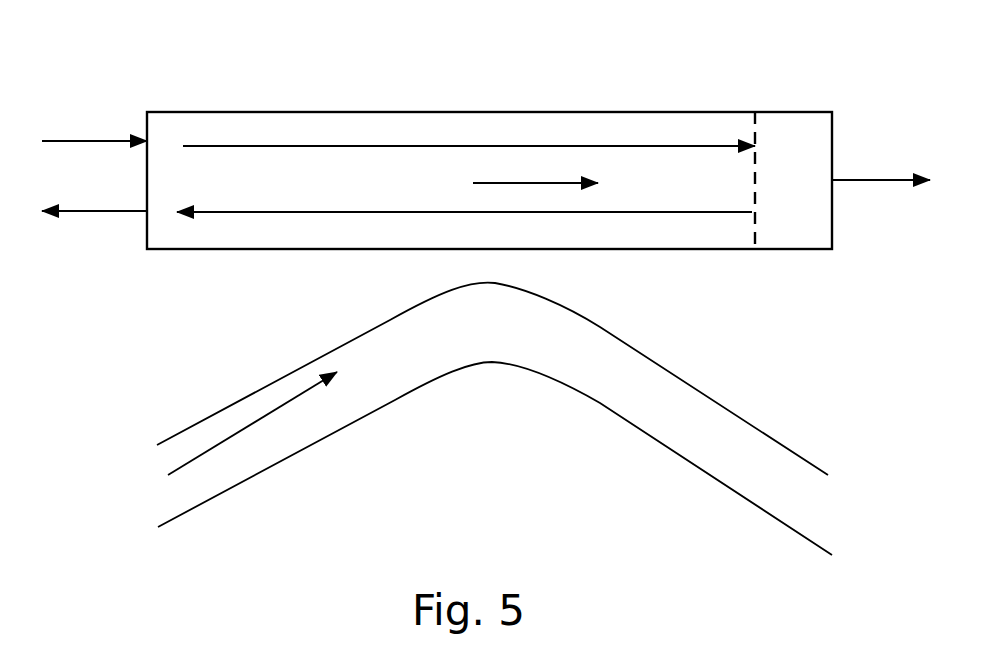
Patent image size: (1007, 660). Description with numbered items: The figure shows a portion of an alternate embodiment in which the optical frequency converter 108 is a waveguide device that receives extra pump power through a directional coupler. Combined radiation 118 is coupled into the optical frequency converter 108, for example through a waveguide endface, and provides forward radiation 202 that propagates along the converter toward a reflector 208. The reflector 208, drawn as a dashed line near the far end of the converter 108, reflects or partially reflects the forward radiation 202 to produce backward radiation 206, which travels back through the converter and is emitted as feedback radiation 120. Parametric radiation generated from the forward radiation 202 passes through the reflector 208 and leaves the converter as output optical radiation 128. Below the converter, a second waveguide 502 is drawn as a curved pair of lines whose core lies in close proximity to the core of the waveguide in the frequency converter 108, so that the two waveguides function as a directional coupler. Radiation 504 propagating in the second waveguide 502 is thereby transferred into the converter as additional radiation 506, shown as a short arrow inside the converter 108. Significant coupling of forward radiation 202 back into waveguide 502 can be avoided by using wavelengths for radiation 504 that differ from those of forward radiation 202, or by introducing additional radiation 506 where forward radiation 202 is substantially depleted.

The optical frequency converter 108 is at (245, 112).
The combined radiation 118 is at (88, 141).
The feedback radiation 120 is at (98, 211).
The output optical radiation 128 is at (878, 180).
The forward radiation 202 is at (363, 146).
The backward radiation 206 is at (680, 212).
The reflector 208 is at (757, 172).
The second waveguide 502 is at (195, 420).
The radiation in second waveguide 504 is at (260, 420).
The additional radiation 506 is at (523, 183).